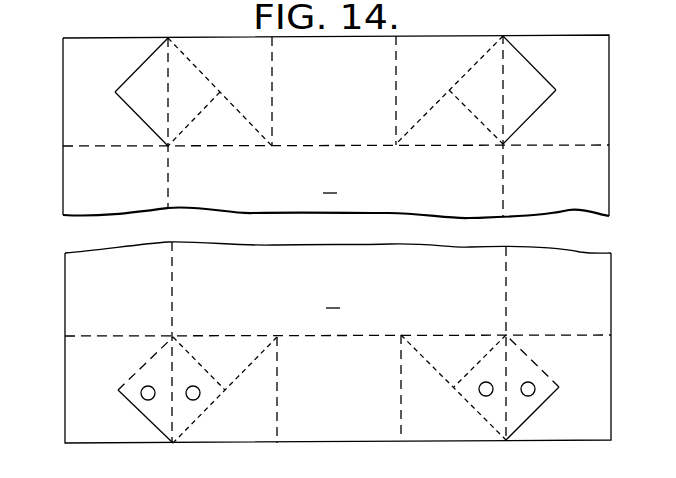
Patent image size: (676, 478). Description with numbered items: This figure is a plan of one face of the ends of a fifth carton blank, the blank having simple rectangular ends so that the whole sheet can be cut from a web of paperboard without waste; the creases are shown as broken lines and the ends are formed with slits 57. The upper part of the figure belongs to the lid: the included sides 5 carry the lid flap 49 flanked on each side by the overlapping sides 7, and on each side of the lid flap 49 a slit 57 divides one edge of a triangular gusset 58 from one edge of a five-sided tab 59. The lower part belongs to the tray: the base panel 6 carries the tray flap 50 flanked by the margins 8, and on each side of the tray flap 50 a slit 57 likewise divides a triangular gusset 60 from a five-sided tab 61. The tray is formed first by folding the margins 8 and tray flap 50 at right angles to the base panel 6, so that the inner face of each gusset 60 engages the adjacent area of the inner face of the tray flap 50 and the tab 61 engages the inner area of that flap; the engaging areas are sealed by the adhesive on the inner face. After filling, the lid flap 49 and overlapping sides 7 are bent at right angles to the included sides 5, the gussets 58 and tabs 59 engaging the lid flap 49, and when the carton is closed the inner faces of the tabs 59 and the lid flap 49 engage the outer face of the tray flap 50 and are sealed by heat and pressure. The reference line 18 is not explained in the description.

The included sides 5 is at (336, 126).
The base panel 6 is at (338, 342).
The overlapping sides 7 is at (80, 181).
The overlapping sides (margins) 8 is at (90, 293).
The fold line 18 is at (336, 130).
The lid flap 49 is at (371, 55).
The tray flap 50 is at (361, 428).
The slits 57 is at (138, 70).
The triangular gusset 58 is at (230, 3).
The five-sided tab 59 is at (83, 113).
The triangular gusset 60 is at (163, 417).
The five-sided tab 61 is at (97, 391).